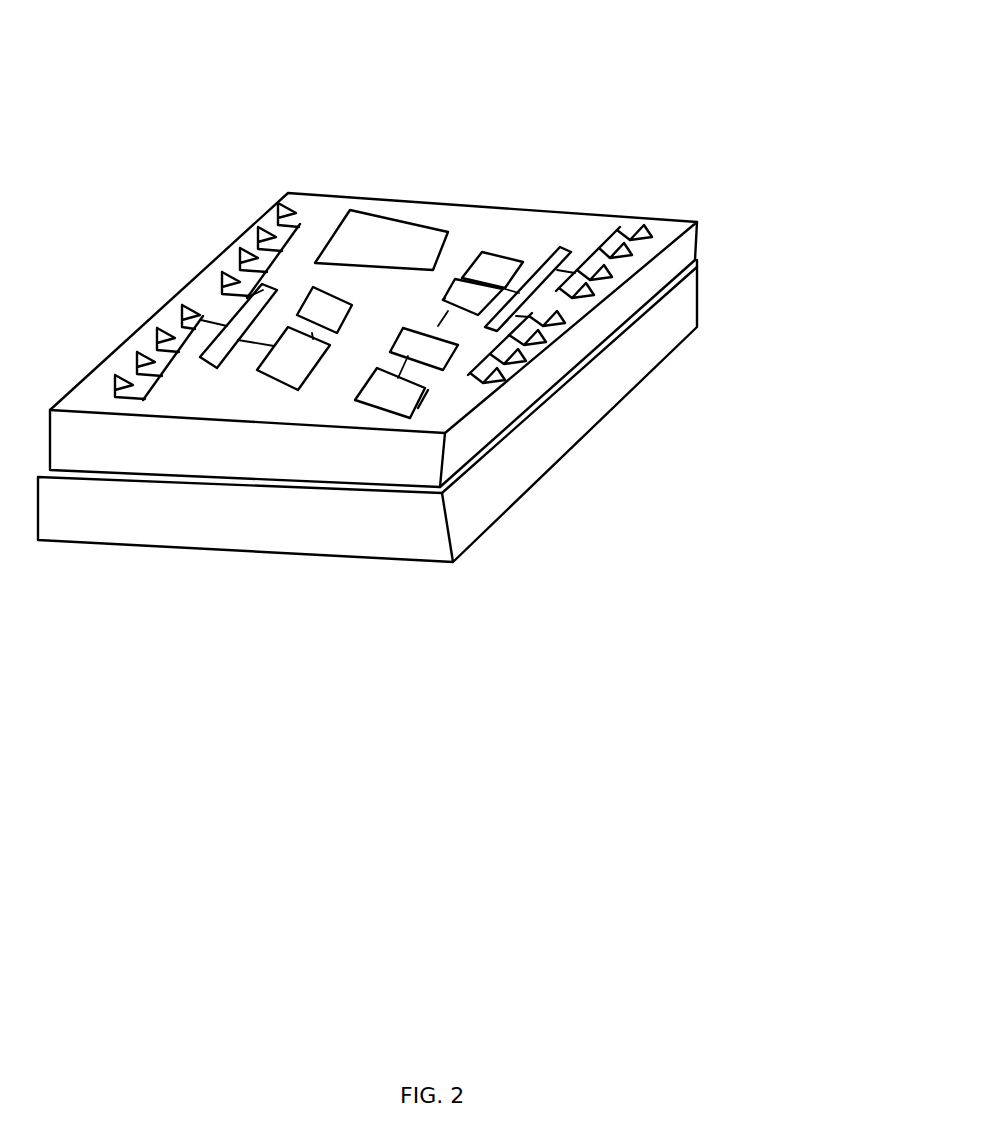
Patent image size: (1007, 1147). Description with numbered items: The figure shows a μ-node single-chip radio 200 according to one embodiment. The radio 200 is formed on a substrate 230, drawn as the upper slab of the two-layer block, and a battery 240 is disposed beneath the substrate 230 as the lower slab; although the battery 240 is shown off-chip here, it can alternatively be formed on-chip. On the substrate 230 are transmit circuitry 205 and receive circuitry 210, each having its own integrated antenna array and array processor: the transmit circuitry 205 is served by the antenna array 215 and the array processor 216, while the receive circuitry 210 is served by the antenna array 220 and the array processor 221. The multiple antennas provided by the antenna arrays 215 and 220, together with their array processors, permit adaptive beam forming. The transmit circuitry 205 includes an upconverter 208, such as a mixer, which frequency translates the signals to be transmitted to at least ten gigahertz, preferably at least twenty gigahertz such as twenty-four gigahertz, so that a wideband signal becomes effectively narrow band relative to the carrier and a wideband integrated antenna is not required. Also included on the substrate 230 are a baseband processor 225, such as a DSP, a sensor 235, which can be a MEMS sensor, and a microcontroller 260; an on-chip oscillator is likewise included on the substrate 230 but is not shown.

The single-chip radio 200 is at (540, 90).
The transmit circuitry 205 is at (463, 255).
The upconverter 208 is at (443, 298).
The receive circuitry 210 is at (287, 372).
The integrated antenna array 215 is at (595, 233).
The array processor 216 is at (557, 247).
The integrated antenna array 220 is at (288, 253).
The array processor 221 is at (215, 369).
The baseband processor 225 is at (403, 328).
The substrate 230 is at (693, 266).
The sensor 235 is at (424, 400).
The battery 240 is at (686, 320).
The microcontroller 260 is at (382, 217).